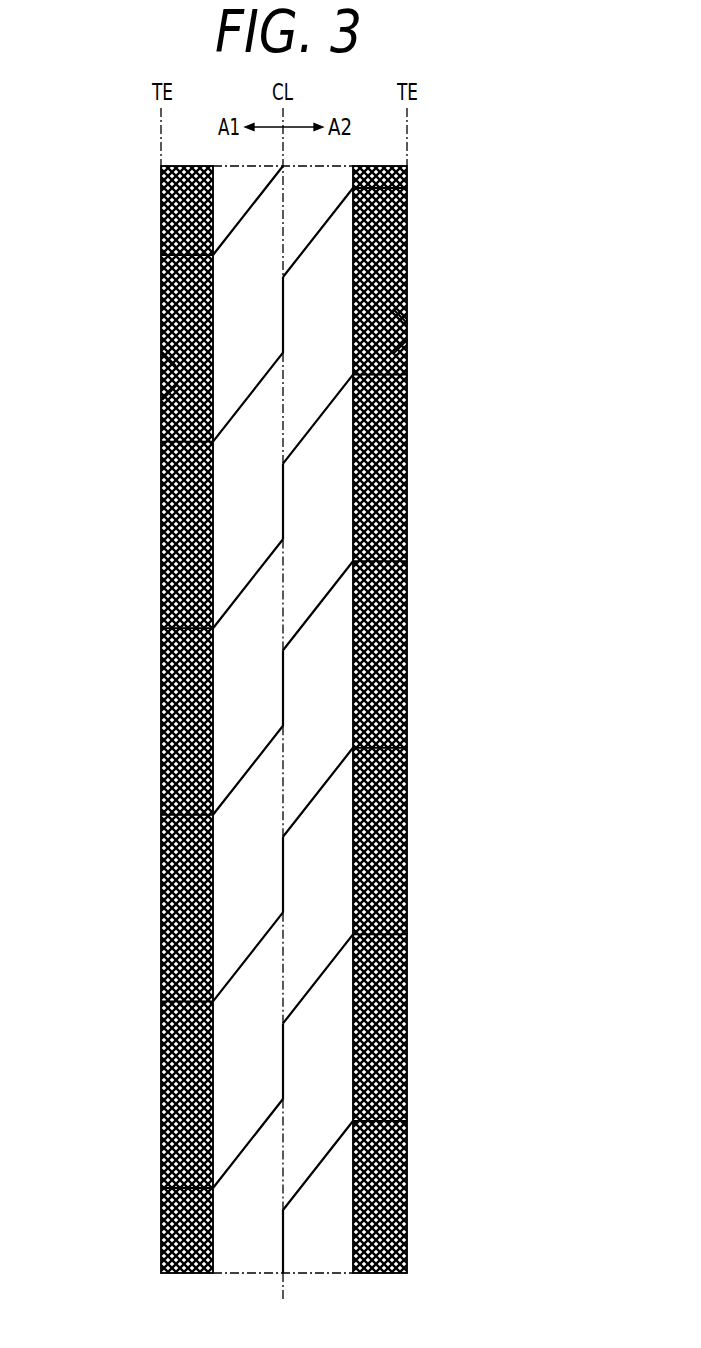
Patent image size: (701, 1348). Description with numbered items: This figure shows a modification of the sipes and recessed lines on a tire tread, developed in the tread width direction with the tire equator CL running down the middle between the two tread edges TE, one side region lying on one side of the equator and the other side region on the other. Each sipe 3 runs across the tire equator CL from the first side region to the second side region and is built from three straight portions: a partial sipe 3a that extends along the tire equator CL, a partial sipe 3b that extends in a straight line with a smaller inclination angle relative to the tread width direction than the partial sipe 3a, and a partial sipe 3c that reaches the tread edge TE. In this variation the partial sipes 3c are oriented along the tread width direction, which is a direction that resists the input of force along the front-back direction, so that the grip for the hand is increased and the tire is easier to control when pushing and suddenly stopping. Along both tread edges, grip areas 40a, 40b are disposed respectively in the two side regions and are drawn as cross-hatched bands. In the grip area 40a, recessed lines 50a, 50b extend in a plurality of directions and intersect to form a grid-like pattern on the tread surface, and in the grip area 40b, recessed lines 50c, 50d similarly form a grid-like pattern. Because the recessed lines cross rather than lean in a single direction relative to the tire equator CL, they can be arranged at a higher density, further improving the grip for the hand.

The sipe 3 is at (282, 704).
The partial sipe 3a is at (284, 327).
The partial sipe 3b is at (318, 232).
The partial sipe 3c is at (185, 448).
The grip area 40a is at (188, 292).
The grip area 40b is at (380, 283).
The recessed line 50a is at (161, 351).
The recessed line 50b is at (162, 400).
The recessed line 50c is at (407, 323).
The recessed line 50d is at (407, 340).